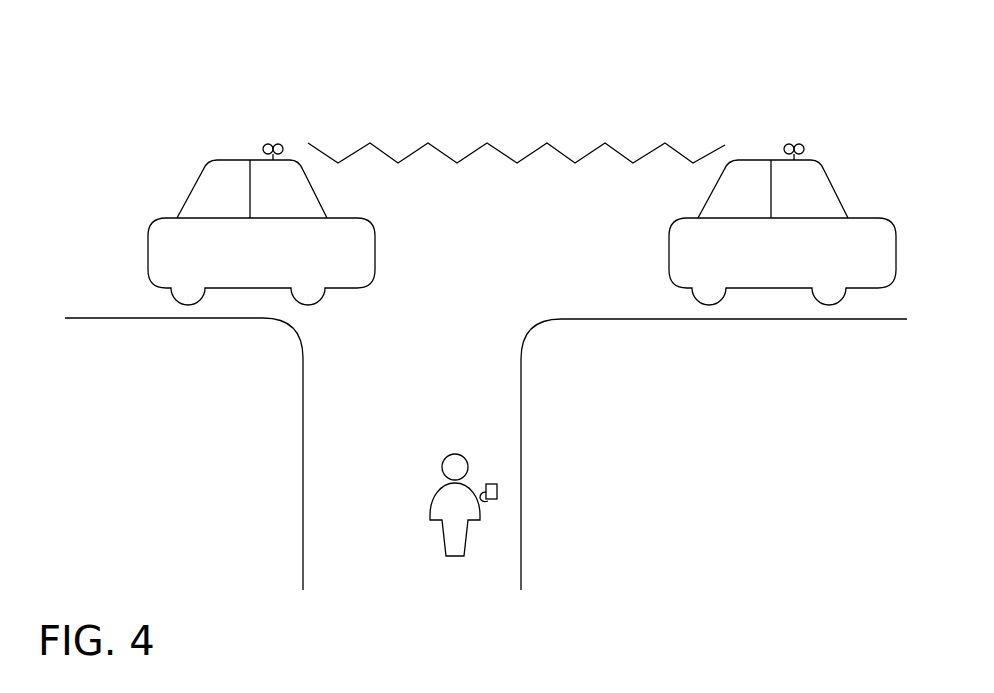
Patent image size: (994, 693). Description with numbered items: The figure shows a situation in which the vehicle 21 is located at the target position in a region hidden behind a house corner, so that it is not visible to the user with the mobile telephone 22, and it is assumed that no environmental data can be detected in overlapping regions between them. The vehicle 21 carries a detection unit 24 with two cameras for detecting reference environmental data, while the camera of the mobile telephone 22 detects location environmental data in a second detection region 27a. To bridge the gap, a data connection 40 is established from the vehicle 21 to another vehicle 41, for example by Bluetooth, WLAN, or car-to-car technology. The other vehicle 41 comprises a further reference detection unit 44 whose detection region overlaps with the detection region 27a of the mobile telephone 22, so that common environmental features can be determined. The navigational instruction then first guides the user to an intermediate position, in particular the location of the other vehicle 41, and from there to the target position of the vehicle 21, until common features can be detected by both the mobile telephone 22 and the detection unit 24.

The other vehicle 41 is at (245, 166).
The reference detection unit 44 is at (252, 143).
The data connection 40 is at (577, 135).
The detection unit 24 is at (793, 128).
The vehicle 21 is at (782, 217).
The second detection region 27a is at (550, 278).
The mobile telephone 22 is at (507, 495).